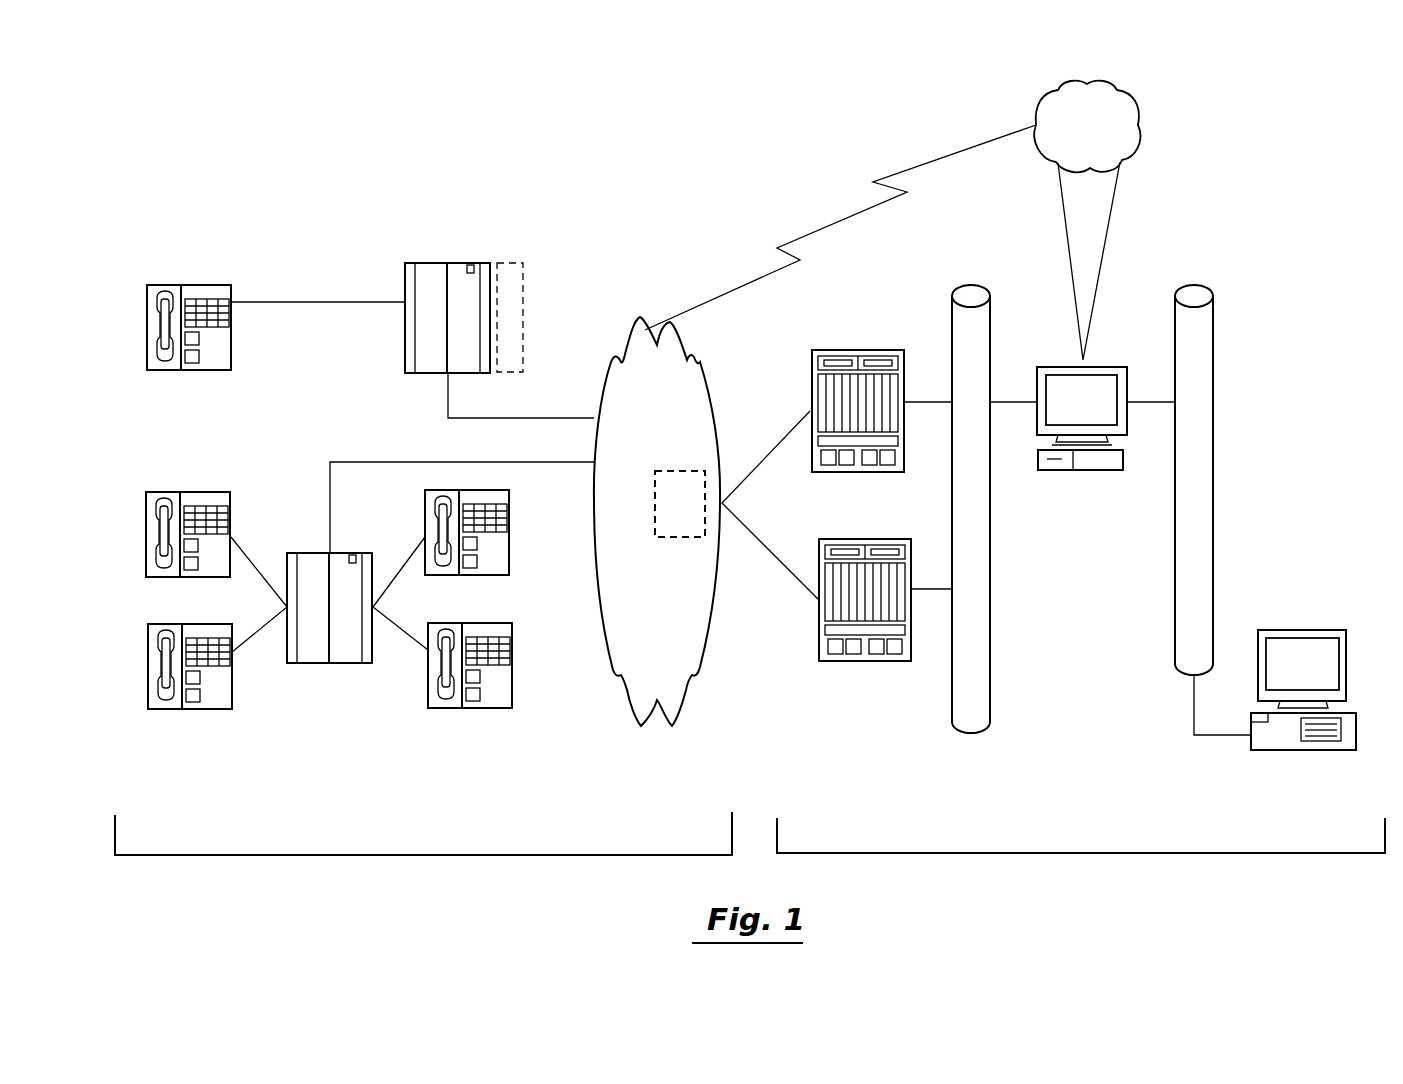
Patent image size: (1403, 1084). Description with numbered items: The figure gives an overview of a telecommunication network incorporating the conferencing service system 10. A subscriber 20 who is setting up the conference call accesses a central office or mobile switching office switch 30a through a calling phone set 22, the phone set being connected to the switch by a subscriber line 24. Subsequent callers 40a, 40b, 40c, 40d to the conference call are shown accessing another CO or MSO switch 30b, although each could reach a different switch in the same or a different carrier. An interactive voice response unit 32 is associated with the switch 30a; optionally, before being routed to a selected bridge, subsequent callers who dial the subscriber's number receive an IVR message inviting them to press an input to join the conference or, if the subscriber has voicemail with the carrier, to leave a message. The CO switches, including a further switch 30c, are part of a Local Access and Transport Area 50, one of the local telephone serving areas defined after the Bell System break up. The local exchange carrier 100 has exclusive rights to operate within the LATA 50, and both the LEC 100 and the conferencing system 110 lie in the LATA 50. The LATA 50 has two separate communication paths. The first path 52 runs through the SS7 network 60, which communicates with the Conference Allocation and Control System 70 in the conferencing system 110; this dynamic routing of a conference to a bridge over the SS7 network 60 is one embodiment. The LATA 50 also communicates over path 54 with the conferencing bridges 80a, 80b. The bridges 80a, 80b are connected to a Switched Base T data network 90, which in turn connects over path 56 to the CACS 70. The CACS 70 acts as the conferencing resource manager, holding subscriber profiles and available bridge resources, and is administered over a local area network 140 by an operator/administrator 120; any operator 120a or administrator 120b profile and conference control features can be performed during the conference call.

The conferencing service system 10 is at (1160, 193).
The subscriber 20 is at (201, 268).
The calling phone set 22 is at (147, 300).
The subscriber line 24 is at (351, 300).
The central office (CO) or Mobile Switching Office (MSO) switch 30a is at (437, 252).
The central office (CO) or Mobile Switching Office (MSO) switch 30b is at (309, 546).
The central office (CO) switch 30c is at (680, 467).
The interactive voice response (IVR) 32 is at (505, 262).
The subsequent caller 40a is at (194, 483).
The subsequent caller 40b is at (195, 709).
The subsequent caller 40c is at (509, 537).
The subsequent caller 40d is at (511, 655).
The Local Access and Transport Area (LATA) 50 is at (631, 306).
The first path 52 is at (826, 226).
The path 54 is at (767, 454).
The path 56 is at (1012, 403).
The SS7 network 60 is at (1123, 128).
The Conference Allocation and Control System (CACS) 70 is at (1108, 367).
The conferencing bridge 80a is at (866, 349).
The conferencing bridge 80b is at (853, 539).
The Switched 10/100 Base T data network 90 is at (991, 649).
The local exchange carrier (LEC) 100 is at (412, 855).
The conferencing system 110 is at (1088, 853).
The operator/administrator 120 is at (1314, 620).
The operator 120a is at (1236, 773).
The administrator 120b is at (1260, 788).
The local area network 140 is at (1213, 367).